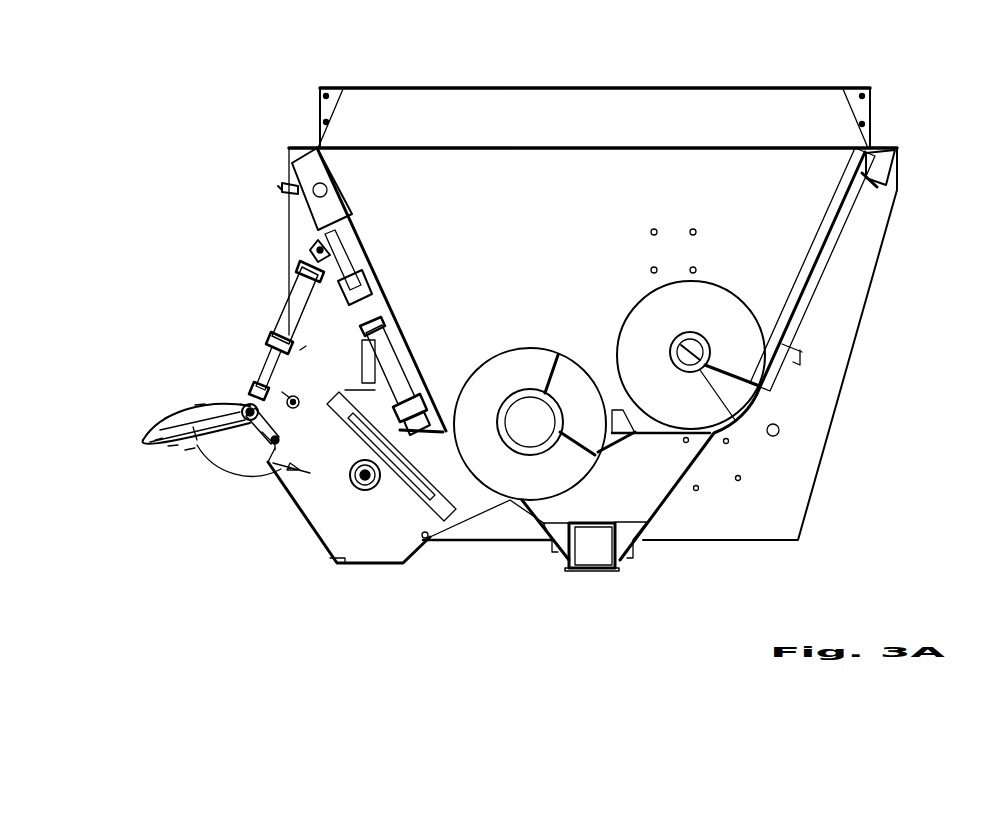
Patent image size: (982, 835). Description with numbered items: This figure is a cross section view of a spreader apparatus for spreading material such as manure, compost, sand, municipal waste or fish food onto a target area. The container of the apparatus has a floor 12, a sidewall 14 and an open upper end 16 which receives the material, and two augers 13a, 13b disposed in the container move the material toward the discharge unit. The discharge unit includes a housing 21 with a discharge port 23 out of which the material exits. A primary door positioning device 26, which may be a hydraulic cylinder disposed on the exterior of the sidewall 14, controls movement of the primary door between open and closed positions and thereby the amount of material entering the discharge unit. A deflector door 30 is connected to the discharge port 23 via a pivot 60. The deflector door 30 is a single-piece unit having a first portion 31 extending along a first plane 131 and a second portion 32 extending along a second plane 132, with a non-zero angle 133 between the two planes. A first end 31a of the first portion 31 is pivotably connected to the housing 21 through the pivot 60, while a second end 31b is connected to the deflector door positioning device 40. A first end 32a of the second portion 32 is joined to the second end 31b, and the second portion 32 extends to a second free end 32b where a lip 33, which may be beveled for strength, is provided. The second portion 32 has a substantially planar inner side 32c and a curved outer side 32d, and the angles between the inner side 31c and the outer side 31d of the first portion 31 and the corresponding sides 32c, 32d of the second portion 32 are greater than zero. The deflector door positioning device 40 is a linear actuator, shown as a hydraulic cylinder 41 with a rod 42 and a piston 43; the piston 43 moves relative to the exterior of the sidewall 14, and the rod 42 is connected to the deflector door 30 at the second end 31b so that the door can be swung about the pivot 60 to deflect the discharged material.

The floor 12 is at (656, 455).
The auger 13a is at (765, 338).
The auger 13b is at (522, 347).
The sidewall 14 is at (318, 108).
The open upper end 16 is at (813, 87).
The housing 21 is at (392, 550).
The discharge port 23 is at (302, 512).
The primary door positioning device 26 is at (375, 310).
The deflector door 30 is at (160, 432).
The first portion 31 is at (270, 462).
The first end 31a is at (300, 401).
The second end 31b is at (300, 350).
The inner side 31c is at (272, 433).
The outer side 31d is at (285, 393).
The second portion 32 is at (185, 450).
The first end 32a is at (245, 405).
The second free end 32b is at (175, 415).
The inner side 32c is at (190, 455).
The outer side 32d is at (200, 408).
The lip 33 is at (172, 447).
The deflector door positioning device 40 is at (288, 333).
The hydraulic cylinder 41 is at (270, 360).
The rod 42 is at (253, 390).
The piston 43 is at (305, 278).
The pivot 60 is at (273, 450).
The first plane 131 is at (244, 404).
The second plane 132 is at (158, 440).
The angle 133 is at (228, 470).